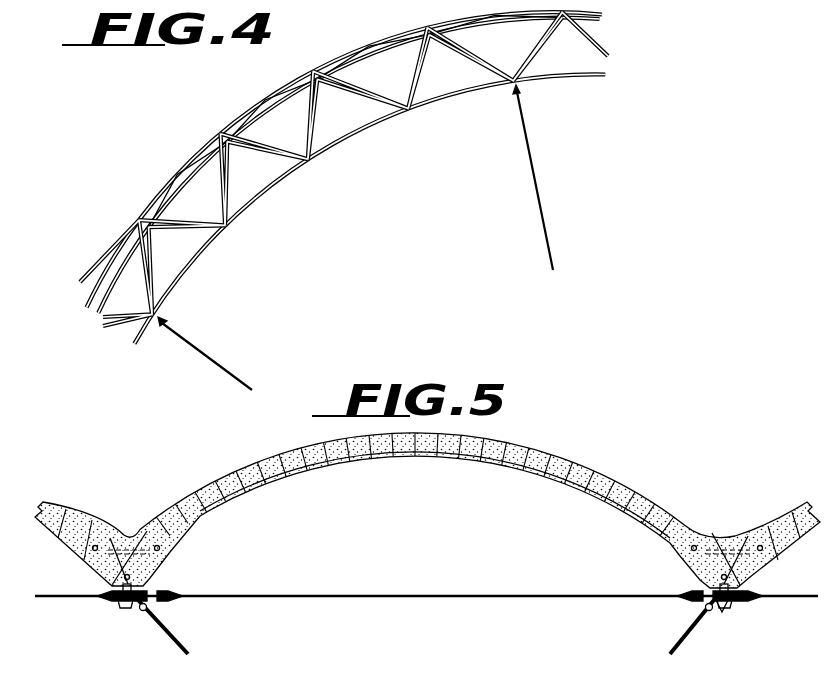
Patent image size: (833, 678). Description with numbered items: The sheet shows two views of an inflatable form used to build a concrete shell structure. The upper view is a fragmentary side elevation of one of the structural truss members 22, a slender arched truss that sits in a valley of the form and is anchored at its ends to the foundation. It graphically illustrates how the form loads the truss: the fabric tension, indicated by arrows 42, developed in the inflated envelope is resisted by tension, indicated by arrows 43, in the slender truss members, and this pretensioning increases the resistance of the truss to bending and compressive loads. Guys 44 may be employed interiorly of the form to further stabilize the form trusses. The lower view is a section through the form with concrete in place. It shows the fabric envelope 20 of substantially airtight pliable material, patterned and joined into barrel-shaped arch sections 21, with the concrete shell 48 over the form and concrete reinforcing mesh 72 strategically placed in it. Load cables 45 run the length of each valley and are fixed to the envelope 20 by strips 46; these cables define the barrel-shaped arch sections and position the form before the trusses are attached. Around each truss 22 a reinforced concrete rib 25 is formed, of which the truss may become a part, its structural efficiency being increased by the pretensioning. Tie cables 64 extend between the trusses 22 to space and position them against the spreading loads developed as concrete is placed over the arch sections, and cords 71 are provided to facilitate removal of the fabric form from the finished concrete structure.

In FIG. 5, the fabric envelope 20 is at (440, 458).
In FIG. 5, the barrel-shaped arch sections 21 is at (551, 484).
In FIG. 4, the structural truss members 22 is at (268, 110).
In FIG. 5, the structural truss members 22 is at (690, 553).
In FIG. 5, the reinforced concrete rib 25 is at (728, 548).
In FIG. 4, the fabric tension arrows 42 is at (249, 205).
In FIG. 4, the truss tension arrows 43 is at (117, 372).
In FIG. 4, the guys 44 is at (190, 345).
In FIG. 5, the load cables 45 is at (720, 612).
In FIG. 5, the strips 46 is at (728, 606).
In FIG. 5, the concrete shell 48 is at (292, 475).
In FIG. 5, the tie cables 64 is at (797, 603).
In FIG. 5, the cords 71 is at (678, 640).
In FIG. 5, the concrete reinforcing mesh 72 is at (606, 474).